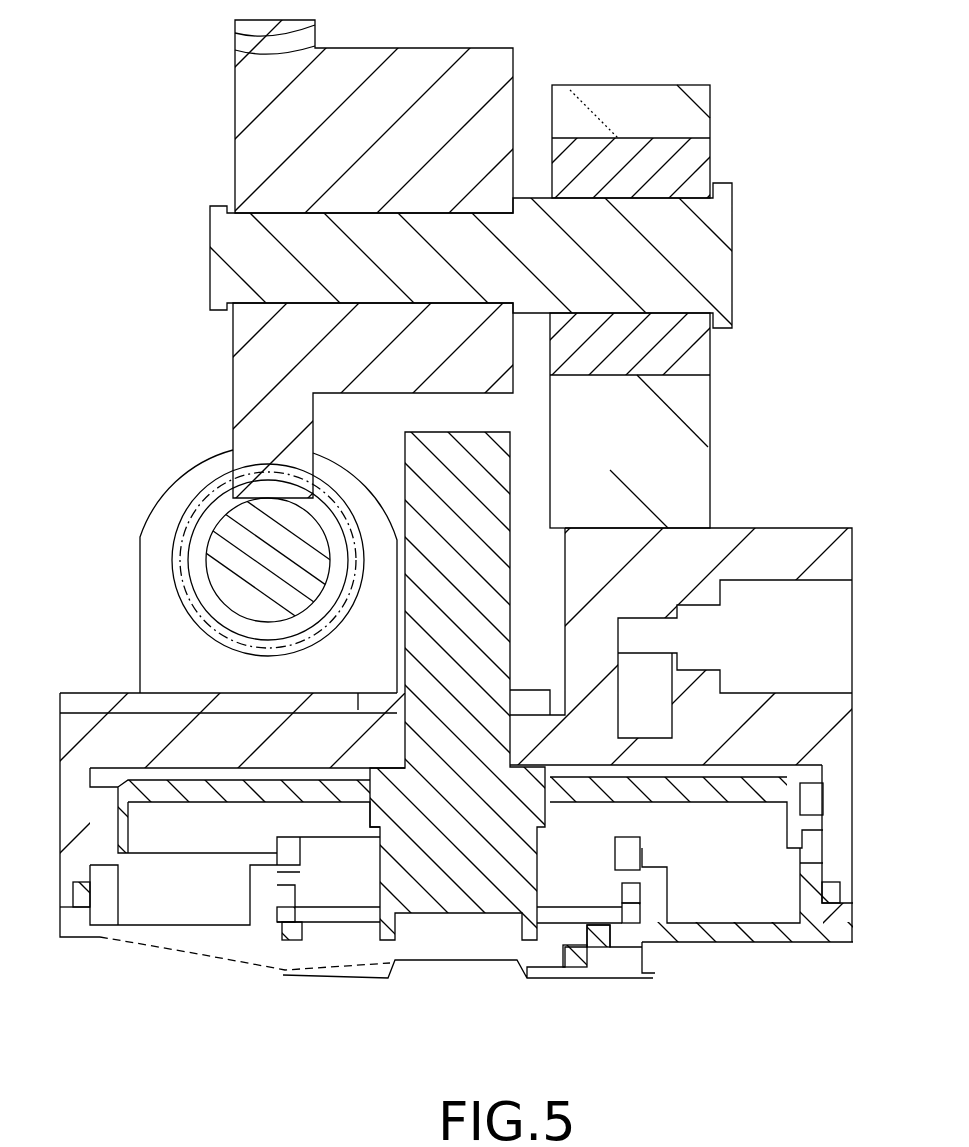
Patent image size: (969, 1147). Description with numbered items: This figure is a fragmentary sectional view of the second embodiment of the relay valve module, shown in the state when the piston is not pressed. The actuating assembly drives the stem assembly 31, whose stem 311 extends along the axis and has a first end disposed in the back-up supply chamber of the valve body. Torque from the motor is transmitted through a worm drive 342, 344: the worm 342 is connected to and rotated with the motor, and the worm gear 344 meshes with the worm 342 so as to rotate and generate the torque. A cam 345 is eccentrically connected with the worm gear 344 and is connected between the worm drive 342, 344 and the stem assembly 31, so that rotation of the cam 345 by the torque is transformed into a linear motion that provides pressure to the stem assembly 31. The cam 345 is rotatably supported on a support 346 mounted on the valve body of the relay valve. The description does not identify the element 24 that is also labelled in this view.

The base 24 is at (410, 883).
The stem assembly 31 is at (512, 468).
The stem 311 is at (477, 510).
The worm 342 is at (173, 551).
The worm gear 344 is at (215, 448).
The cam 345 is at (465, 378).
The support 346 is at (622, 397).